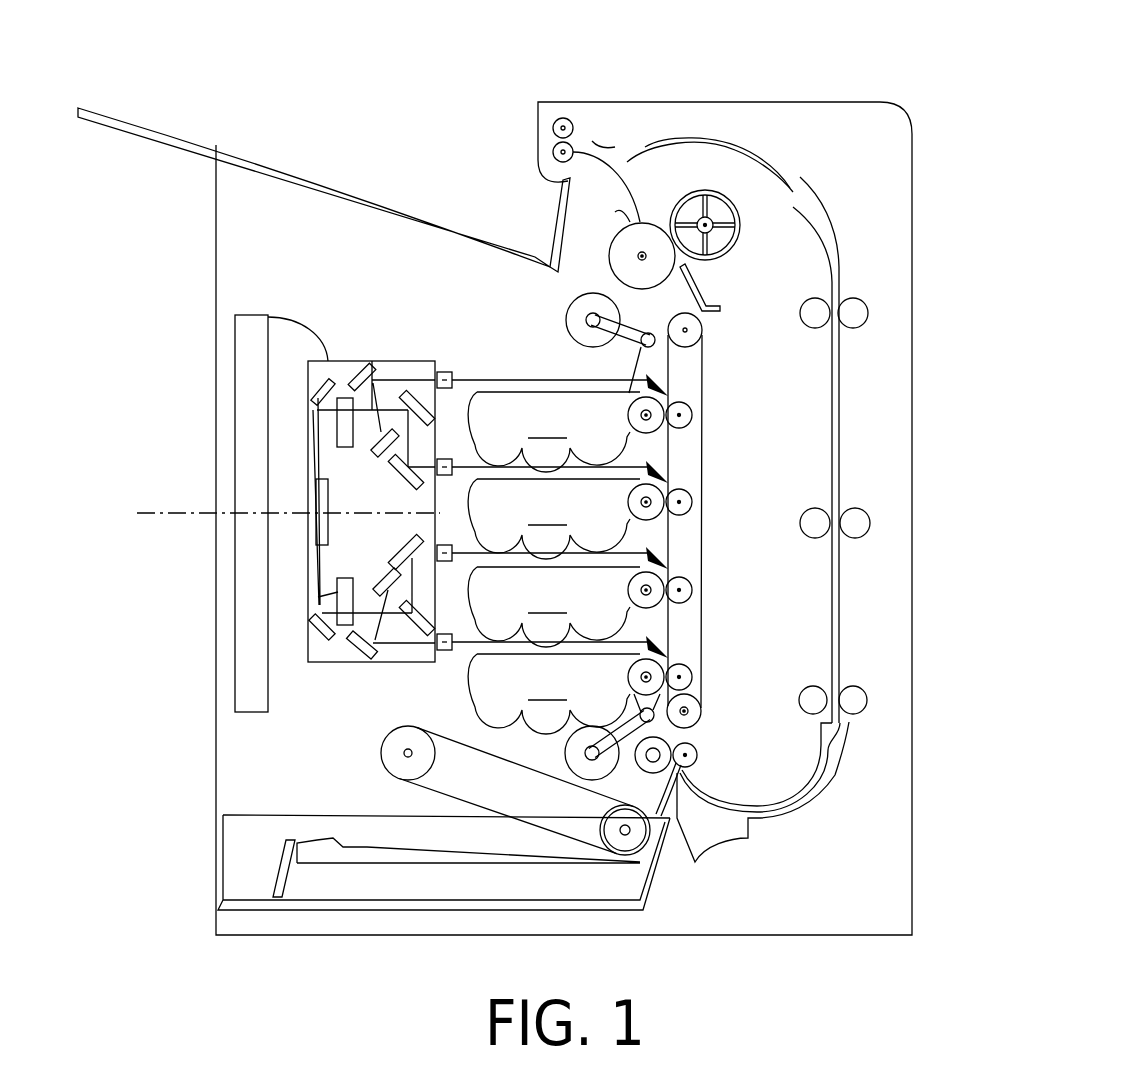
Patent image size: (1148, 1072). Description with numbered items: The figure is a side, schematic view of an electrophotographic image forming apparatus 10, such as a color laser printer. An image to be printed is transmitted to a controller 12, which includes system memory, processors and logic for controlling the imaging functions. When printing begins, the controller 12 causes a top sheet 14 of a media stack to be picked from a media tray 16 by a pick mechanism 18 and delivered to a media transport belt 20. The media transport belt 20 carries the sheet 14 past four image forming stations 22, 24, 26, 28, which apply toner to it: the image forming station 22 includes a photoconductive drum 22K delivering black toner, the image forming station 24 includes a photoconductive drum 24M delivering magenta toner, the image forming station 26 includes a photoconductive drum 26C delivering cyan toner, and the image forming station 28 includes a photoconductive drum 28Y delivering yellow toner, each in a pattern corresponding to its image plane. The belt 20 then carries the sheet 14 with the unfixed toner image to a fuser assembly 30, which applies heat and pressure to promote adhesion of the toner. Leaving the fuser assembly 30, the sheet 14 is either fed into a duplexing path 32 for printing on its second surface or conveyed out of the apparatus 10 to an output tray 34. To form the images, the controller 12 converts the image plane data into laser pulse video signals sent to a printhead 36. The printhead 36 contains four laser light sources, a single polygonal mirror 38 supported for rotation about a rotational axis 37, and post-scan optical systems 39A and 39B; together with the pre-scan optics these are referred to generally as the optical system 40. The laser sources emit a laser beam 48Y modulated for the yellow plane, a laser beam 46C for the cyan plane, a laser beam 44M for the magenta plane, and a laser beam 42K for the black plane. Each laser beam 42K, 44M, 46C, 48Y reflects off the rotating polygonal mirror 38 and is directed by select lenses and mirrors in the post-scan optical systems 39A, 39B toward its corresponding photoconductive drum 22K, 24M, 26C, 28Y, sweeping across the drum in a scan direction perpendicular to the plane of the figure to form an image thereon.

The electrophotographic image forming apparatus 10 is at (762, 78).
The controller 12 is at (235, 378).
The top sheet 14 is at (322, 837).
The media tray 16 is at (233, 855).
The pick mechanism 18 is at (398, 797).
The media transport belt 20 is at (702, 693).
The image forming station 22 is at (566, 694).
The photoconductive drum 22K is at (670, 658).
The image forming station 24 is at (566, 607).
The photoconductive drum 24M is at (670, 575).
The image forming station 26 is at (566, 519).
The photoconductive drum 26C is at (670, 487).
The image forming station 28 is at (566, 432).
The photoconductive drum 28Y is at (670, 400).
The fuser assembly 30 is at (740, 310).
The duplexing path 32 is at (862, 422).
The output tray 34 is at (376, 165).
The printhead 36 is at (401, 342).
The rotational axis 37 is at (157, 500).
The polygonal mirror 38 is at (318, 528).
The post-scan optical system 39A is at (343, 346).
The post-scan optical system 39B is at (330, 663).
The optical system 40 is at (470, 336).
The laser beam 42K is at (465, 648).
The laser beam 44M is at (453, 555).
The laser beam 46C is at (452, 468).
The laser beam 48Y is at (518, 358).